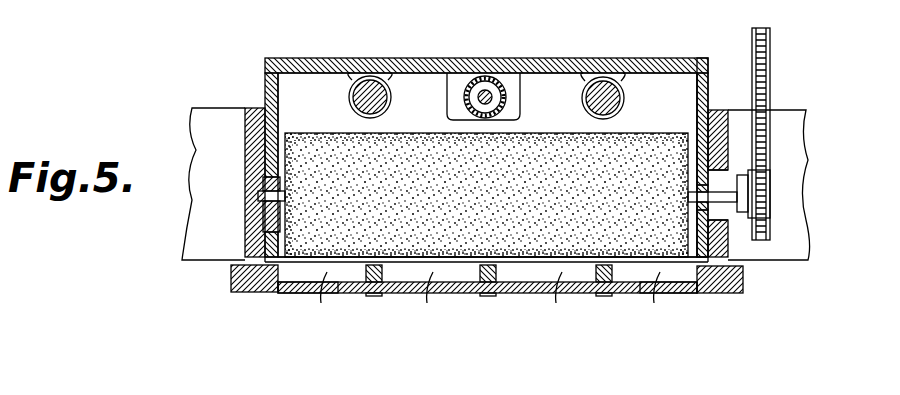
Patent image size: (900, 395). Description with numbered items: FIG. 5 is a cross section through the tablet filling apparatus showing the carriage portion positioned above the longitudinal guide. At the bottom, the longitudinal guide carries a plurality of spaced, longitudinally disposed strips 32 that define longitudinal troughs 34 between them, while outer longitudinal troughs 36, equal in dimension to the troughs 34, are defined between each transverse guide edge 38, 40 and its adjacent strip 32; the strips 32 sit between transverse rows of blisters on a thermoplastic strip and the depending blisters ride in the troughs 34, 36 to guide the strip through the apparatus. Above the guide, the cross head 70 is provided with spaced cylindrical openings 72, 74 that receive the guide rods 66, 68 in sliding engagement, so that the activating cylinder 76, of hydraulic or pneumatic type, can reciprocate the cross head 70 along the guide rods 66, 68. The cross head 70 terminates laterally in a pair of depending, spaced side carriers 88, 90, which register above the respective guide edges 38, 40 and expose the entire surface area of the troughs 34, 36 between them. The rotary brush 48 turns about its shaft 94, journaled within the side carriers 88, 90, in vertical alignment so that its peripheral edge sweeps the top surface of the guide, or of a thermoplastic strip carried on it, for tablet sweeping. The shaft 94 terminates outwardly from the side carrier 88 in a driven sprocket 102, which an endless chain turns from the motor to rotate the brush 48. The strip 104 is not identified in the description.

The strips 32 is at (622, 310).
The longitudinal troughs 34 is at (487, 302).
The longitudinal troughs 36 is at (487, 302).
The transverse guide edge 38 is at (743, 288).
The transverse guide edge 40 is at (231, 280).
The rotary brush 48 is at (312, 240).
The guide rod 66 is at (386, 81).
The guide rod 68 is at (608, 82).
The cross head 70 is at (297, 85).
The cylindrical opening 72 is at (352, 80).
The cylindrical opening 74 is at (592, 79).
The activating cylinder 76 is at (455, 78).
The side carrier 88 is at (710, 85).
The side carrier 90 is at (265, 86).
The shaft 94 is at (263, 197).
The driven sprocket 102 is at (763, 200).
The strip 104 is at (767, 75).